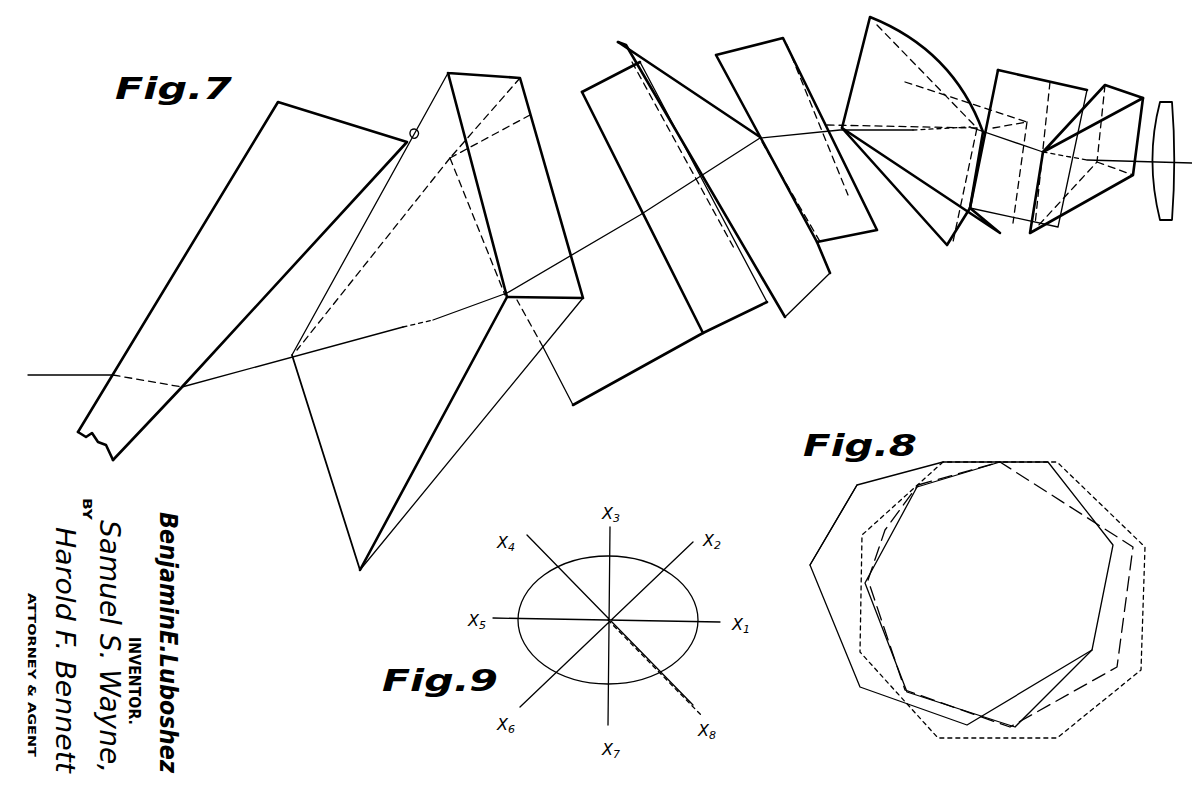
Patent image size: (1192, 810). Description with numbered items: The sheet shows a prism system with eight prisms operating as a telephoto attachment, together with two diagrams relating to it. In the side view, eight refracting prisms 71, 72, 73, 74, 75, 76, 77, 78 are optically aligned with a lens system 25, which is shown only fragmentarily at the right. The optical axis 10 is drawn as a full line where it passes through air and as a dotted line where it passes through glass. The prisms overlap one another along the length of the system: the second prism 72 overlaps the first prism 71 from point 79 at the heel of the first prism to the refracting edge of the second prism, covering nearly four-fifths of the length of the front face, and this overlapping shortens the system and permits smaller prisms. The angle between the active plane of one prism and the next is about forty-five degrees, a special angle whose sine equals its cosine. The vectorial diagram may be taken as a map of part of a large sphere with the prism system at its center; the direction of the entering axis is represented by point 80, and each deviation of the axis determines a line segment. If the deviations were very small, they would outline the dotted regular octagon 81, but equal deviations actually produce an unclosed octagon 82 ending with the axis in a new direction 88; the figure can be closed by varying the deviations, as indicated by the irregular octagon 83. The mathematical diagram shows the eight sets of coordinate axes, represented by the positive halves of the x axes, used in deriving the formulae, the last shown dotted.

In FIG. 7, the optical axis 10 is at (30, 375).
In FIG. 7, the lens system 25 is at (1168, 213).
In FIG. 7, the first prism 71 is at (208, 235).
In FIG. 7, the second prism 72 is at (437, 460).
In FIG. 7, the third prism 73 is at (617, 368).
In FIG. 7, the fourth prism 74 is at (798, 290).
In FIG. 7, the fifth prism 75 is at (847, 220).
In FIG. 7, the sixth prism 76 is at (965, 225).
In FIG. 7, the seventh prism 77 is at (1012, 210).
In FIG. 7, the eighth prism 78 is at (1093, 188).
In FIG. 7, the point at the heel of the first prism 79 is at (414, 128).
In FIG. 8, the point representing direction of entering optical axis 80 is at (945, 460).
In FIG. 8, the regular octagon 81 is at (1115, 687).
In FIG. 8, the unclosed octagon 82 is at (1100, 500).
In FIG. 8, the irregular octagon 83 is at (830, 520).
In FIG. 8, the new direction of the axis 88 is at (1007, 460).